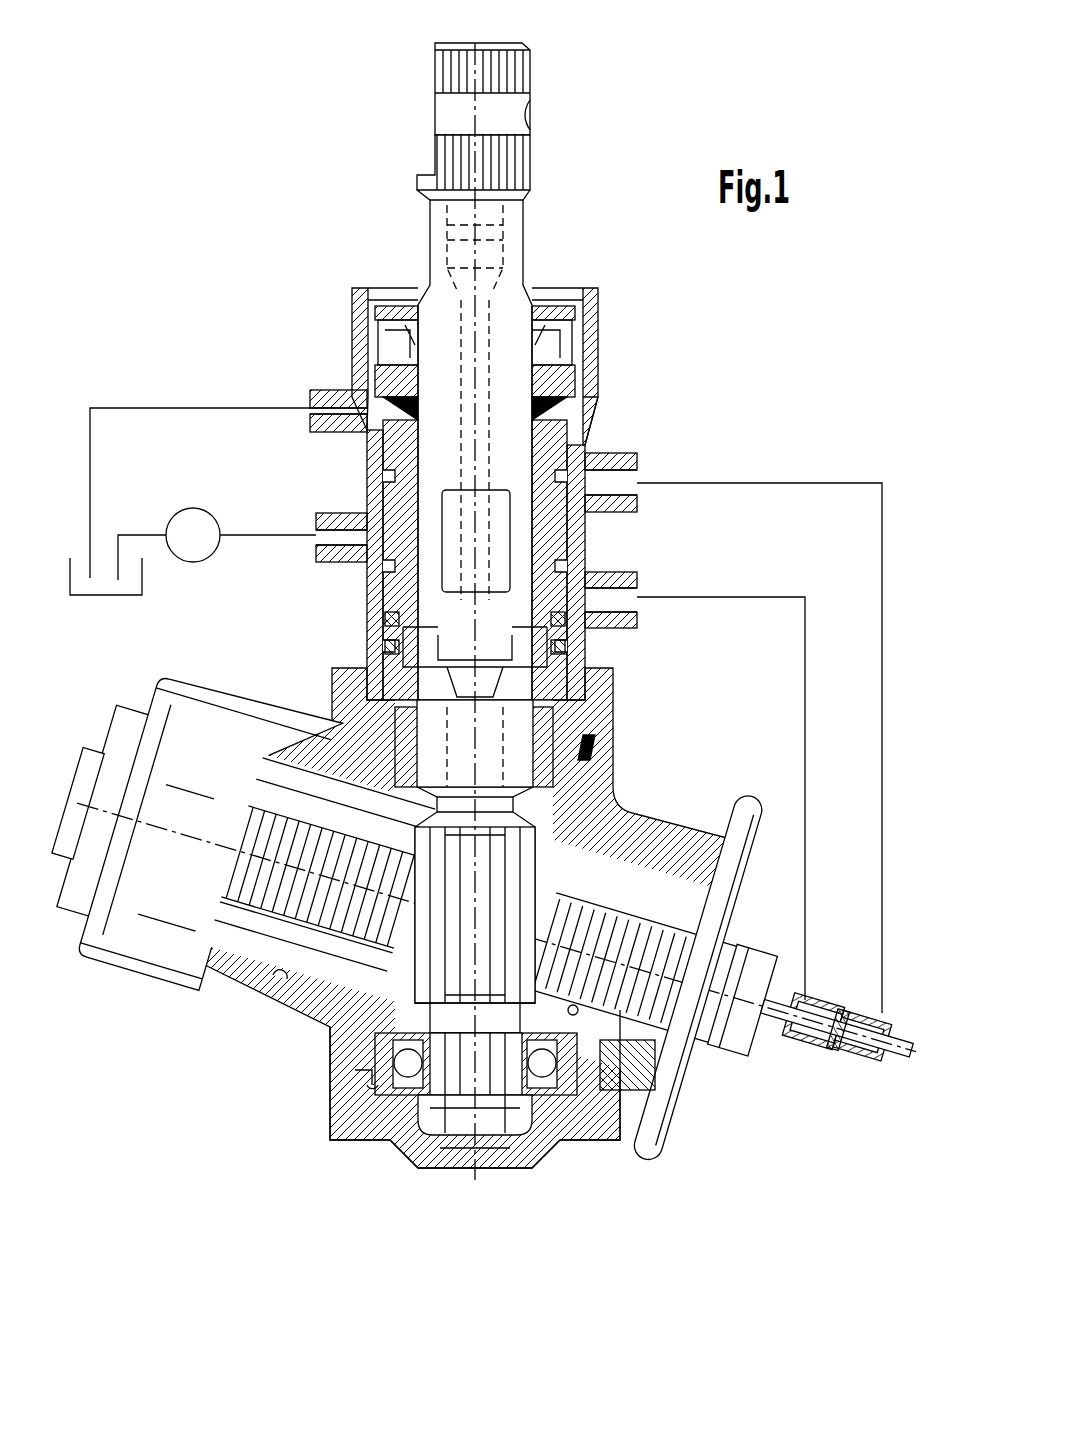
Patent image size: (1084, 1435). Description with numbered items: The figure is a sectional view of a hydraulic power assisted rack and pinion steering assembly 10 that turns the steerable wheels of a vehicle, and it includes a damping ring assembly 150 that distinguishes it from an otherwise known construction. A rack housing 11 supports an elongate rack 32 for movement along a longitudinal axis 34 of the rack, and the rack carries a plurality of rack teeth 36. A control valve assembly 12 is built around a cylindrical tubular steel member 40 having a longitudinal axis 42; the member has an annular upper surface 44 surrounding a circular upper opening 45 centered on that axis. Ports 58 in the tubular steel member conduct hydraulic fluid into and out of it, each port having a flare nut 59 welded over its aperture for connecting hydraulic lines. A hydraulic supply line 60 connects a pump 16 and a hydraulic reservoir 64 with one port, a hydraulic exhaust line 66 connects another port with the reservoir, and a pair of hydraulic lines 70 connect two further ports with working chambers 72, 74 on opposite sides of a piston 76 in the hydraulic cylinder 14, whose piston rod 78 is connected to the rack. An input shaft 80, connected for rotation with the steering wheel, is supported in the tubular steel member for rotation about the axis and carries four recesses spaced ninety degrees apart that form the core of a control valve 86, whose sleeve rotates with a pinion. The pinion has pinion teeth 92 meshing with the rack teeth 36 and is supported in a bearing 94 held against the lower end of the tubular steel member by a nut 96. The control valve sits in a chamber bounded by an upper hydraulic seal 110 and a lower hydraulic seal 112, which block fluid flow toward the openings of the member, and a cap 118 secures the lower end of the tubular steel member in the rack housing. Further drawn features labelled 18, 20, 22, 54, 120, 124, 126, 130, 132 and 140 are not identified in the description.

The hydraulic power assisted rack and pinion steering assembly 10 is at (215, 318).
The rack housing 11 is at (123, 973).
The control valve assembly 12 is at (352, 332).
The hydraulic cylinder 14 is at (845, 1045).
The pump 16 is at (192, 508).
The housing 18 is at (345, 668).
The lower housing portion 20 is at (332, 1130).
The seal 22 is at (272, 978).
The rack 32 is at (305, 782).
The longitudinal axis of the rack 34 is at (752, 930).
The rack teeth 36 is at (287, 853).
The tubular steel member 40 is at (595, 357).
The longitudinal axis 42 is at (475, 38).
The annular upper surface 44 is at (585, 300).
The circular upper opening 45 is at (558, 275).
The lever 54 is at (683, 1090).
The ports 58 is at (310, 425).
The flare nut 59 is at (318, 425).
The hydraulic supply line 60 is at (273, 537).
The hydraulic reservoir 64 is at (122, 596).
The hydraulic exhaust line 66 is at (205, 407).
The hydraulic lines 70 is at (880, 580).
The working chamber 72 is at (813, 1013).
The working chamber 74 is at (860, 1017).
The piston 76 is at (831, 1037).
The piston rod 78 is at (907, 1037).
The input shaft 80 is at (510, 247).
The control valve 86 is at (375, 483).
The pinion teeth 92 is at (505, 893).
The bearing 94 is at (520, 1080).
The nut 96 is at (513, 1120).
The upper hydraulic seal 110 is at (385, 385).
The lower hydraulic seal 112 is at (372, 655).
The cap 118 is at (452, 1172).
The plug bore 120 is at (503, 1162).
The retainer 124 is at (627, 1090).
The worm gear shaft 126 is at (627, 993).
The seal 130 is at (363, 1087).
The seal ring 132 is at (700, 1065).
The seal 140 is at (580, 723).
The damping ring assembly 150 is at (593, 412).